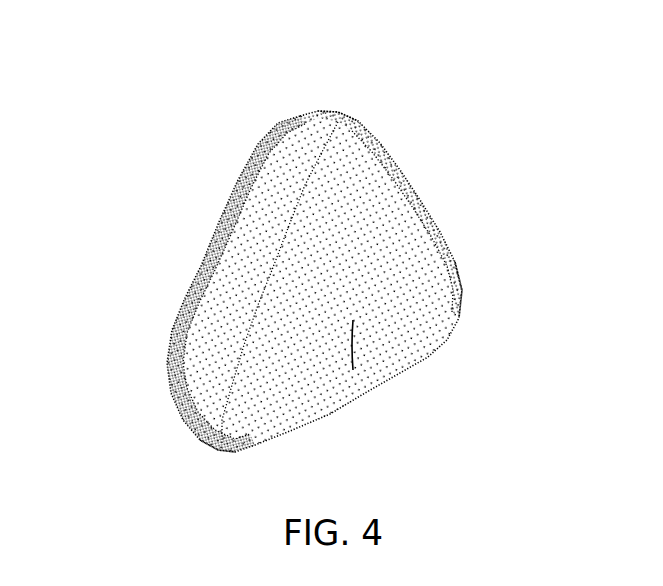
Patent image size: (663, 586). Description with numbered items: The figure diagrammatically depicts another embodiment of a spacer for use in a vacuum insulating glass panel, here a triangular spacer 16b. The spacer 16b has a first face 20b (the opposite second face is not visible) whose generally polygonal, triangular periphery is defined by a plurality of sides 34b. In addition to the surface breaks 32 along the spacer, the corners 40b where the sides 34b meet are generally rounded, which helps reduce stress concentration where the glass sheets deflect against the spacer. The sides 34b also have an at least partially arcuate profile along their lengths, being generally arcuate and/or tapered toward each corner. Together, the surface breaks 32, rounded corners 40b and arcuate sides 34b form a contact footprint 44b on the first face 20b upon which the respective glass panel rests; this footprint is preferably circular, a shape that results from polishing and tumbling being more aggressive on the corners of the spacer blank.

The triangular spacer 16b is at (332, 287).
The first face 20b is at (383, 297).
The surface breaks 32 is at (260, 220).
The sides 34b is at (227, 238).
The corners 40b is at (332, 112).
The contact footprint 44b is at (353, 372).